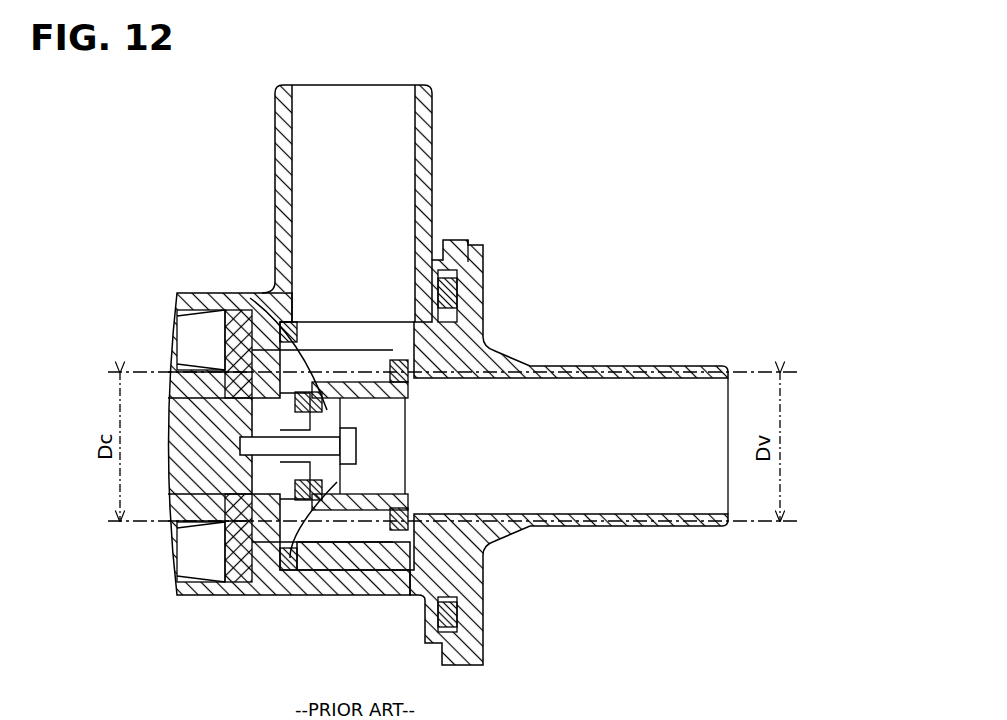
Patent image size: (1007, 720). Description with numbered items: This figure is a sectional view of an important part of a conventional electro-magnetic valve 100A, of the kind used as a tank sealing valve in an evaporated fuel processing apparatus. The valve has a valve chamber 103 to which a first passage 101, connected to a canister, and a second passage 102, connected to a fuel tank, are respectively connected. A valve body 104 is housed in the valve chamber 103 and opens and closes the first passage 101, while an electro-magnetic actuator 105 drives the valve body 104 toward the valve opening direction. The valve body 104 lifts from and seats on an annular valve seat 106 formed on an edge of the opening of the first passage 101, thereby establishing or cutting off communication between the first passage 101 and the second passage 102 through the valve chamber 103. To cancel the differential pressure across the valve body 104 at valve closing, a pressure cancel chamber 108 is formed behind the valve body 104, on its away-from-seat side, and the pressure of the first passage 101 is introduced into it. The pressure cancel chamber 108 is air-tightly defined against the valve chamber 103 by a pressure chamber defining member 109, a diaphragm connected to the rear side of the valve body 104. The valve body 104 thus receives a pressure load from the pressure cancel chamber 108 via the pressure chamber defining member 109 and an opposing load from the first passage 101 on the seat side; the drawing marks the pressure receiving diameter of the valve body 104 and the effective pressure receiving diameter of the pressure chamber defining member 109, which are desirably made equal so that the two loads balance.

The electro-magnetic valve 100A is at (616, 150).
The first passage 101 is at (633, 478).
The second passage 102 is at (375, 140).
The valve chamber 103 is at (370, 530).
The valve body 104 is at (333, 530).
The electro-magnetic actuator 105 is at (171, 351).
The annular valve seat 106 is at (393, 372).
The pressure cancel chamber 108 is at (268, 530).
The pressure chamber defining member 109 is at (243, 335).